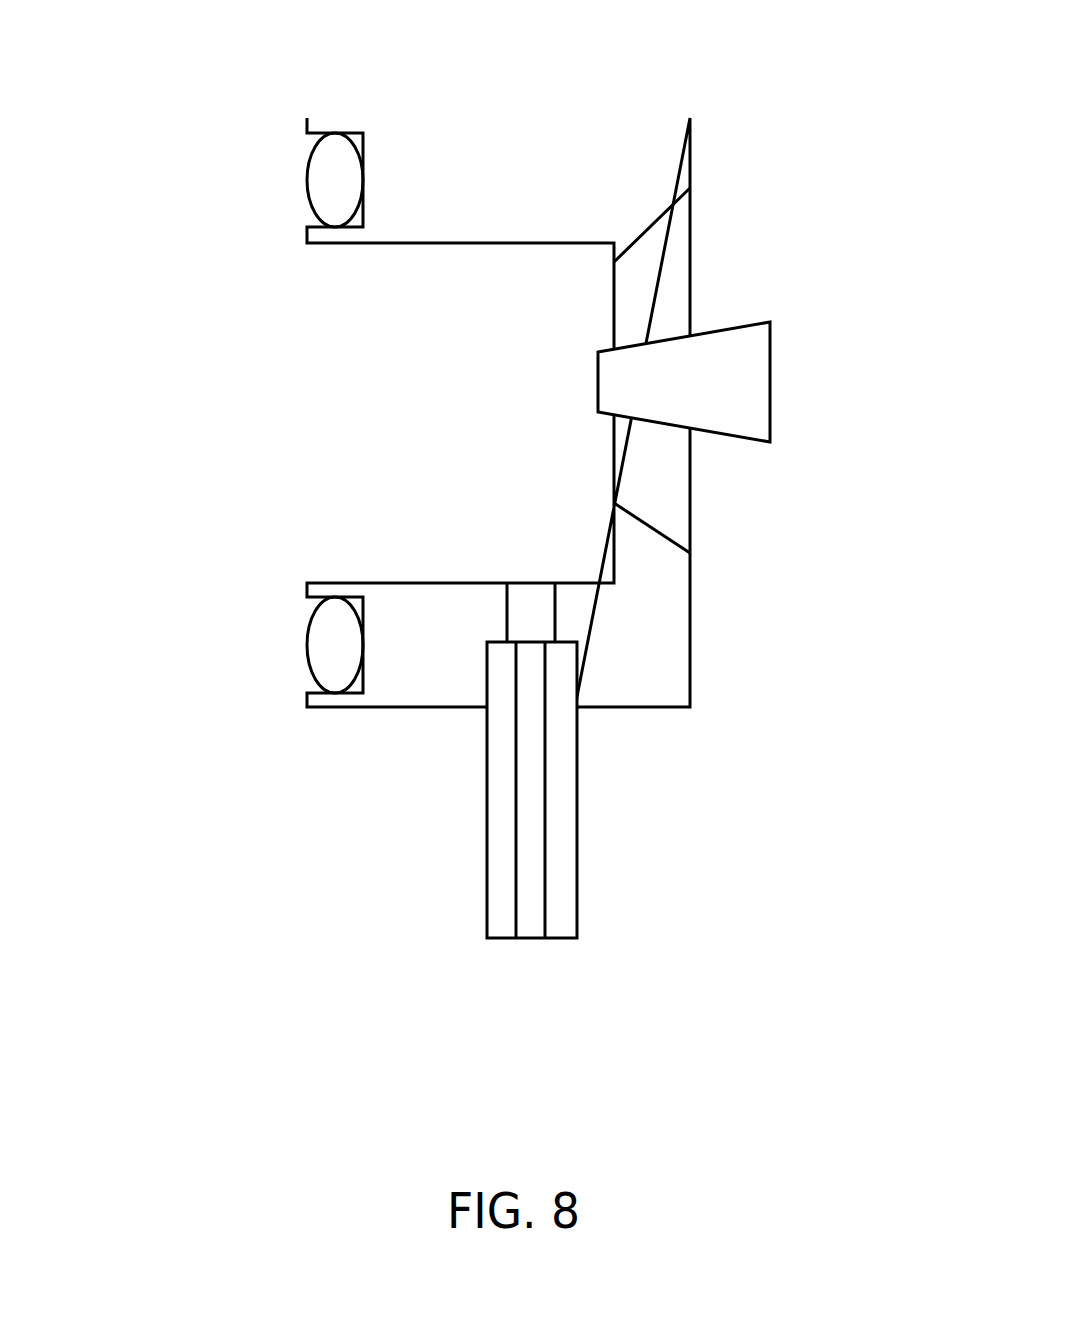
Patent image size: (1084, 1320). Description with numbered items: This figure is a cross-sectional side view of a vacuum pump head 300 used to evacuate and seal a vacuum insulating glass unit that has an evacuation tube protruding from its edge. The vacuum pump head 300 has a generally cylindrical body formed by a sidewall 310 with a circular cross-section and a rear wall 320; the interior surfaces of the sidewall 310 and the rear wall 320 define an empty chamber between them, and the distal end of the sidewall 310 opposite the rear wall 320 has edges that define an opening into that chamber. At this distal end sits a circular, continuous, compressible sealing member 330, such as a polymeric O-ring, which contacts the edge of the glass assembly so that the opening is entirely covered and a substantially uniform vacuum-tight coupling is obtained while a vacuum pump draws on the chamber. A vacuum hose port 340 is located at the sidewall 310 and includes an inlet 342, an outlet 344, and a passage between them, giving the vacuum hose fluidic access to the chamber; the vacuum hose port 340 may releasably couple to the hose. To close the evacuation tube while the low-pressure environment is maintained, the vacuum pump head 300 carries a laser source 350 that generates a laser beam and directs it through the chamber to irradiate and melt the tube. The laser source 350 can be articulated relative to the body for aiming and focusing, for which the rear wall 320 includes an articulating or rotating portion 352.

The vacuum pump head 300 is at (222, 101).
The sidewall 310 is at (578, 115).
The rear wall 320 is at (692, 258).
The sealing member 330 is at (307, 197).
The vacuum hose port 340 is at (577, 860).
The inlet 342 is at (528, 580).
The outlet 344 is at (528, 938).
The laser source 350 is at (773, 341).
The articulating or rotating portion 352 is at (658, 537).